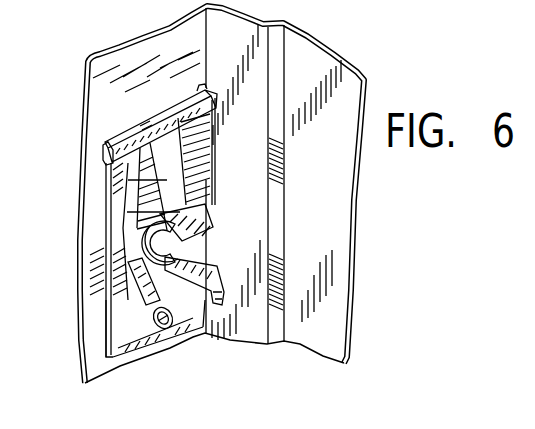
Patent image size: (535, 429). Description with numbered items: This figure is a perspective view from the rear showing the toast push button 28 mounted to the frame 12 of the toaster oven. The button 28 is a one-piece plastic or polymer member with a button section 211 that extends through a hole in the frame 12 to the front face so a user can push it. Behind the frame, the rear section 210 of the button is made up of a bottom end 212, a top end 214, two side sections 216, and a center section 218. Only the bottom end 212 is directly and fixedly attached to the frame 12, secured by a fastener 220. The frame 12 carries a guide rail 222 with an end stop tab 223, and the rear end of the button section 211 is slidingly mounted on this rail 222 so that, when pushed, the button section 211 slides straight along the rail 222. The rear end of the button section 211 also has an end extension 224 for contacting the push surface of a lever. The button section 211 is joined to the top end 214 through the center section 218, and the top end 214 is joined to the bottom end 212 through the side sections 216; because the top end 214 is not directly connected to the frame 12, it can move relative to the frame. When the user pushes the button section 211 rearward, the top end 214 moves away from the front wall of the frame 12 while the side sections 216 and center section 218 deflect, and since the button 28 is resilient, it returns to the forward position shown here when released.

The frame 12 is at (120, 53).
The top end 214 is at (123, 137).
The center section 218 is at (146, 132).
The toast push button 28 is at (121, 176).
The side sections 216 is at (208, 186).
The rear section 210 is at (112, 310).
The button section 211 is at (135, 233).
The end extension 224 is at (213, 222).
The guide rail 222 is at (212, 260).
The end stop tab 223 is at (225, 292).
The bottom end 212 is at (183, 316).
The fastener 220 is at (165, 328).